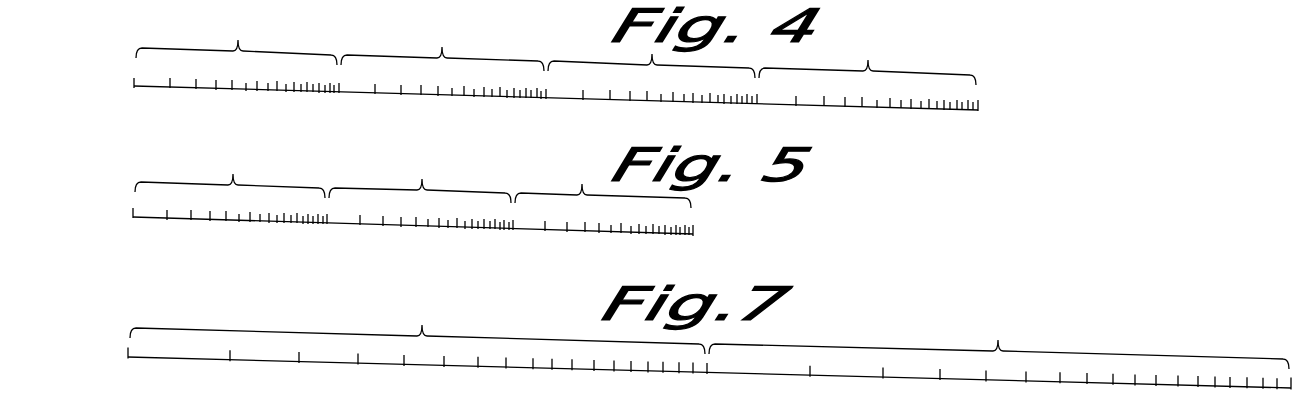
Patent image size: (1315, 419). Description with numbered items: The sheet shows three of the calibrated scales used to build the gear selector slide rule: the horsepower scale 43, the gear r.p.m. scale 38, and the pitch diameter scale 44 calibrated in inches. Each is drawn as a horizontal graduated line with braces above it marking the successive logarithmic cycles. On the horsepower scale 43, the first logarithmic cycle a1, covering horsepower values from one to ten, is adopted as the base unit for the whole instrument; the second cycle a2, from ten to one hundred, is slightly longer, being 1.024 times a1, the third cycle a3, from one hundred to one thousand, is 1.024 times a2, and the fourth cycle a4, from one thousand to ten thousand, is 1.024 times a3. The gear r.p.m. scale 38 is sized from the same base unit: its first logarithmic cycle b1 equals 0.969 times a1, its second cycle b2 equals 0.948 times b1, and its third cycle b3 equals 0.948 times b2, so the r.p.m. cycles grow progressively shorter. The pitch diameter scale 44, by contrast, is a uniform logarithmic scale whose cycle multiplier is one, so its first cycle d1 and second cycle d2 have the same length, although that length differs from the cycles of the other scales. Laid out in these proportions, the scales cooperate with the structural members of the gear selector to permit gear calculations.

In FIG. 4, the horsepower scale 43 is at (981, 104).
In FIG. 5, the gear r.p.m. scale 38 is at (695, 231).
In FIG. 7, the pitch diameter scale 44 is at (198, 359).
In FIG. 4, the first logarithmic cycle of the horsepower scale a1 is at (236, 43).
In FIG. 4, the second logarithmic cycle of the horsepower scale a2 is at (442, 50).
In FIG. 4, the third logarithmic cycle of the horsepower scale a3 is at (651, 58).
In FIG. 4, the fourth logarithmic cycle of the horsepower scale a4 is at (867, 65).
In FIG. 5, the first logarithmic cycle of the gear r.p.m. scale b1 is at (230, 178).
In FIG. 5, the second logarithmic cycle of the gear r.p.m. scale b2 is at (420, 184).
In FIG. 5, the third logarithmic cycle of the gear r.p.m. scale b3 is at (603, 190).
In FIG. 7, the first logarithmic cycle of the pitch diameter scale d1 is at (417, 332).
In FIG. 7, the second logarithmic cycle of the pitch diameter scale d2 is at (999, 348).